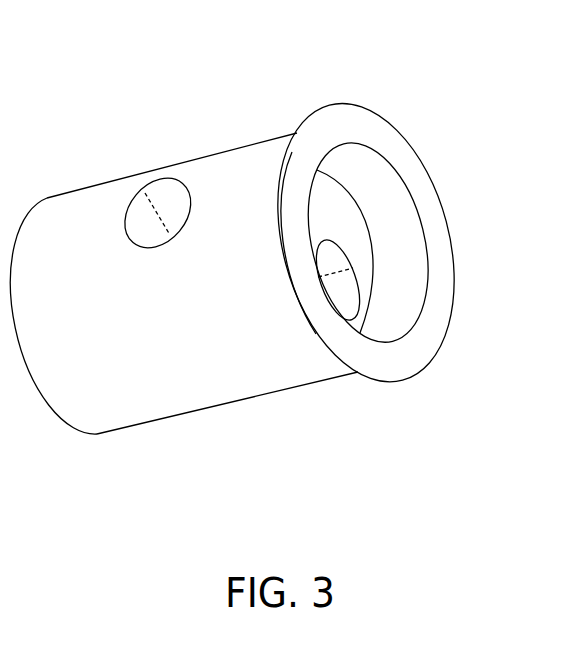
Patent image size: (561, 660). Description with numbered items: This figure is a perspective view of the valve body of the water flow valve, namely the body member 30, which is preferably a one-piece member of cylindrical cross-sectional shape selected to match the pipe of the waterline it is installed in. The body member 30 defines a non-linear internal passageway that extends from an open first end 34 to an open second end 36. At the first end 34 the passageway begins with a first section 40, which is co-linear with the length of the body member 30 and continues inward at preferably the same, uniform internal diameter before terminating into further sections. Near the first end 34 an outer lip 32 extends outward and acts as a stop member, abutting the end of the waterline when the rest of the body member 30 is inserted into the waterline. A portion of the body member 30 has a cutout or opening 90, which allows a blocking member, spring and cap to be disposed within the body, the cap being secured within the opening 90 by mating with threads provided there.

The body member 30 is at (234, 90).
The outer lip 32 is at (348, 102).
The open first end 34 is at (412, 332).
The open second end 36 is at (50, 410).
The first section 40 is at (399, 281).
The opening 90 is at (148, 183).